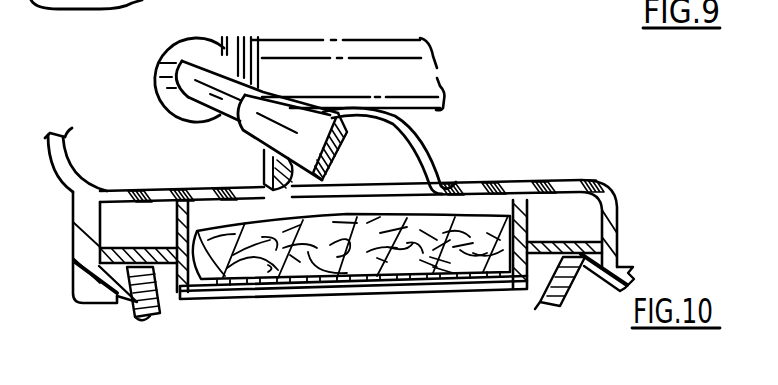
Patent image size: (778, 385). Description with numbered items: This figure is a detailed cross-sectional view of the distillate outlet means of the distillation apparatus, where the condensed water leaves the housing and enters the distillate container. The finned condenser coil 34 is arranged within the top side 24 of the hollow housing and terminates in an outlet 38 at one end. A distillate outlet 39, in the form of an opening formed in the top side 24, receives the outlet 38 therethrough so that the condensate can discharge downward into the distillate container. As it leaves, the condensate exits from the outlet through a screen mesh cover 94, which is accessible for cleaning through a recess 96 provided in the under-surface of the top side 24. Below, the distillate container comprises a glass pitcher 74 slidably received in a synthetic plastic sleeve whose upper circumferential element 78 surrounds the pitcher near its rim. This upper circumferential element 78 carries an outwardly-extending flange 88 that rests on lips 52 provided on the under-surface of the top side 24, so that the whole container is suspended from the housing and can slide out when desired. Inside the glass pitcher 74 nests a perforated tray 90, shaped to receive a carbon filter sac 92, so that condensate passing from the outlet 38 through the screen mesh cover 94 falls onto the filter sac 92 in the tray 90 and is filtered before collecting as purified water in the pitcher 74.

The top side 24 is at (67, 164).
The finned condenser coil 34 is at (362, 36).
The outlet 38 is at (261, 139).
The distillate outlet 39 is at (262, 163).
The lips 52 is at (101, 303).
The glass pitcher 74 is at (168, 307).
The upper circumferential element 78 is at (128, 310).
The outwardly-extending flange 88 is at (140, 250).
The perforated tray 90 is at (532, 228).
The carbon filter sac 92 is at (361, 216).
The screen mesh cover 94 is at (343, 130).
The recess 96 is at (418, 156).